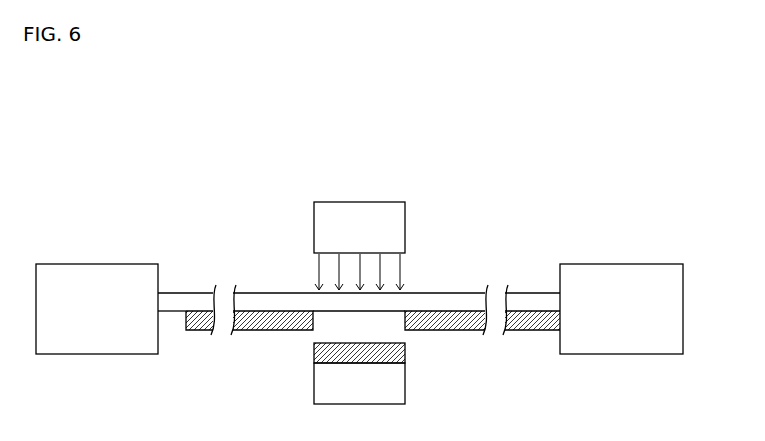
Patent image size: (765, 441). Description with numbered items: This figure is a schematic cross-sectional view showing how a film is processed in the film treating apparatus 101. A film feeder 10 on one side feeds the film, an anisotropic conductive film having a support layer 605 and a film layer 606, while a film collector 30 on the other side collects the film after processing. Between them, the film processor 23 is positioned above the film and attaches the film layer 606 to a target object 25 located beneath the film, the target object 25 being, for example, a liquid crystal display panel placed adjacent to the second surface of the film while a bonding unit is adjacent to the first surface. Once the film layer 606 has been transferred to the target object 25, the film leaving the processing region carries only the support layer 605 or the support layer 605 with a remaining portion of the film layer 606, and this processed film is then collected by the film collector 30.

The film treating apparatus 101 is at (494, 144).
The film processor 23 is at (357, 215).
The support layer 605 is at (452, 304).
The film layer 606 is at (450, 318).
The target object 25 is at (405, 400).
The film collector 30 is at (101, 345).
The film feeder 10 is at (643, 345).